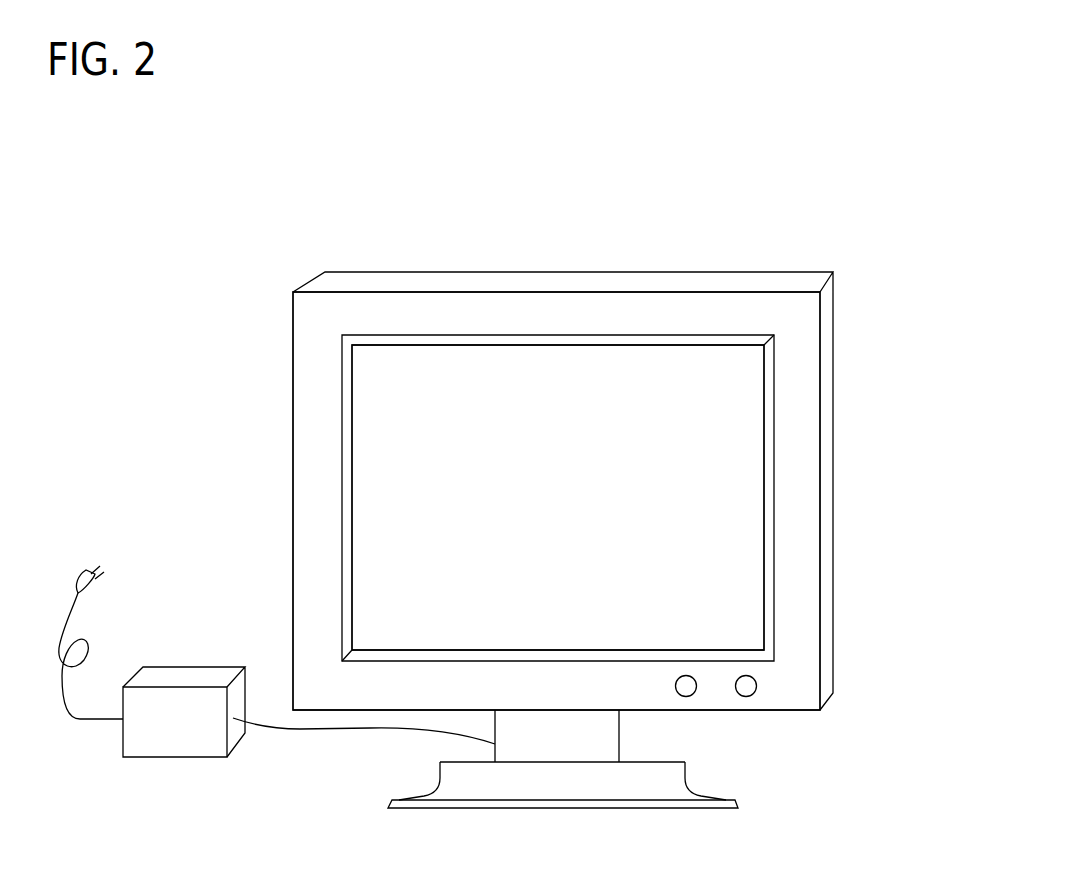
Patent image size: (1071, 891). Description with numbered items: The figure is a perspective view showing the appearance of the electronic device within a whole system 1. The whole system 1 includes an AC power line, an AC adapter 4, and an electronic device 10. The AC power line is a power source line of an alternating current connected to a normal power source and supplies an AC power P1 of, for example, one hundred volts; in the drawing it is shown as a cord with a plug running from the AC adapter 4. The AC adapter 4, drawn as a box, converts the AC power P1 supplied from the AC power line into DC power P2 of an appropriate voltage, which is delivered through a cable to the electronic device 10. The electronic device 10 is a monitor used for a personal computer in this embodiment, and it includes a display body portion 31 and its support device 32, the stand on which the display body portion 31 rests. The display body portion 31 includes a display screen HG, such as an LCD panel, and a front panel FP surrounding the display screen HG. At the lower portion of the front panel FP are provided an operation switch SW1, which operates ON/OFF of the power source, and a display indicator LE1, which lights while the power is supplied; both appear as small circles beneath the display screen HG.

The whole system 1 is at (534, 145).
The electronic device 10 is at (645, 268).
The display body portion 31 is at (826, 356).
The front panel FP is at (800, 614).
The display screen HG is at (713, 530).
The display indicator LE1 is at (688, 697).
The operation switch SW1 is at (750, 697).
The support device 32 is at (471, 808).
The AC adapter 4 is at (197, 673).
The AC power P1 is at (95, 720).
The DC power P2 is at (310, 733).